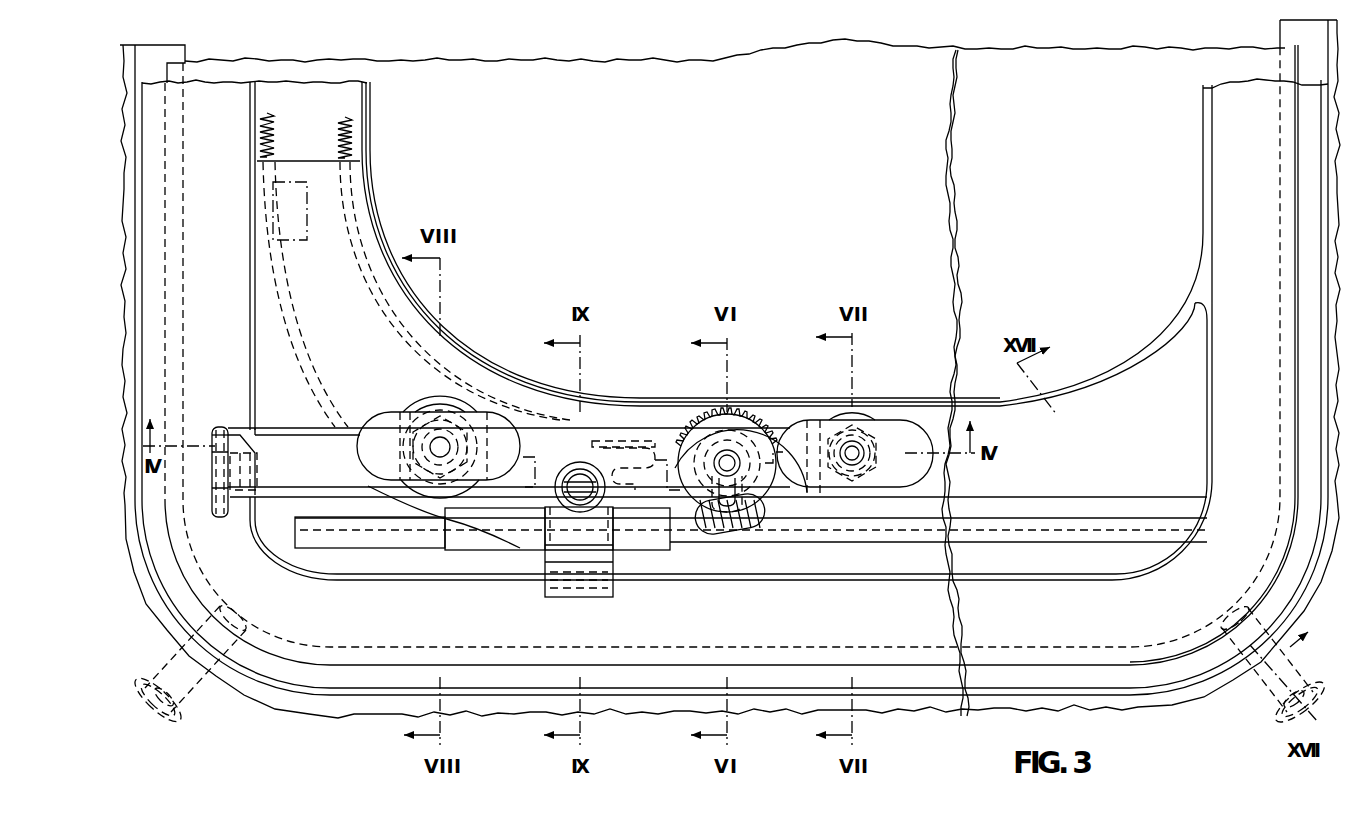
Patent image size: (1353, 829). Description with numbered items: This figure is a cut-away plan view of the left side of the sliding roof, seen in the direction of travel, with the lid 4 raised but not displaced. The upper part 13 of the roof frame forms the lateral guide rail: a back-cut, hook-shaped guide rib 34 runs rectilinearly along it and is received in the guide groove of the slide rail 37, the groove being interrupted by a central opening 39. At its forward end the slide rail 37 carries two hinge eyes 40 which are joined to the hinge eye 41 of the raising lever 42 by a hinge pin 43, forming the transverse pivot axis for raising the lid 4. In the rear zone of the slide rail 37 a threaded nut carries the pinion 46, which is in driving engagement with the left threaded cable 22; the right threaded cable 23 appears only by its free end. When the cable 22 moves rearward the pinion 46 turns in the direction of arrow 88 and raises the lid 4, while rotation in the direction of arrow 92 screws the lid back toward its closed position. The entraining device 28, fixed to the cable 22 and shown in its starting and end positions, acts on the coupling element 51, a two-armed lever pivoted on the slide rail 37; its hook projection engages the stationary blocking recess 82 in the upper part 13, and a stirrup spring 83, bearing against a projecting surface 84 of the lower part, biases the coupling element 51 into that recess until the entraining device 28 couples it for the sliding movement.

The lid 4 is at (745, 144).
The upper part 13 is at (348, 356).
The left threaded cable 22 is at (274, 120).
The right threaded cable 23 is at (340, 135).
The entraining device 28 is at (307, 214).
The guide rib 34 is at (873, 537).
The slide rail 37 is at (243, 512).
The central opening 39 is at (640, 549).
The hinge eyes 40 is at (212, 437).
The hinge eye 41 is at (215, 492).
The raising lever 42 is at (276, 445).
The hinge pin 43 is at (221, 427).
The pinion 46 is at (735, 414).
The coupling element 51 is at (537, 462).
The blocking recess 82 is at (633, 510).
The stirrup spring 83 is at (637, 455).
The projecting surface 84 is at (600, 440).
The arrow 88 is at (668, 417).
The arrow 92 is at (788, 420).